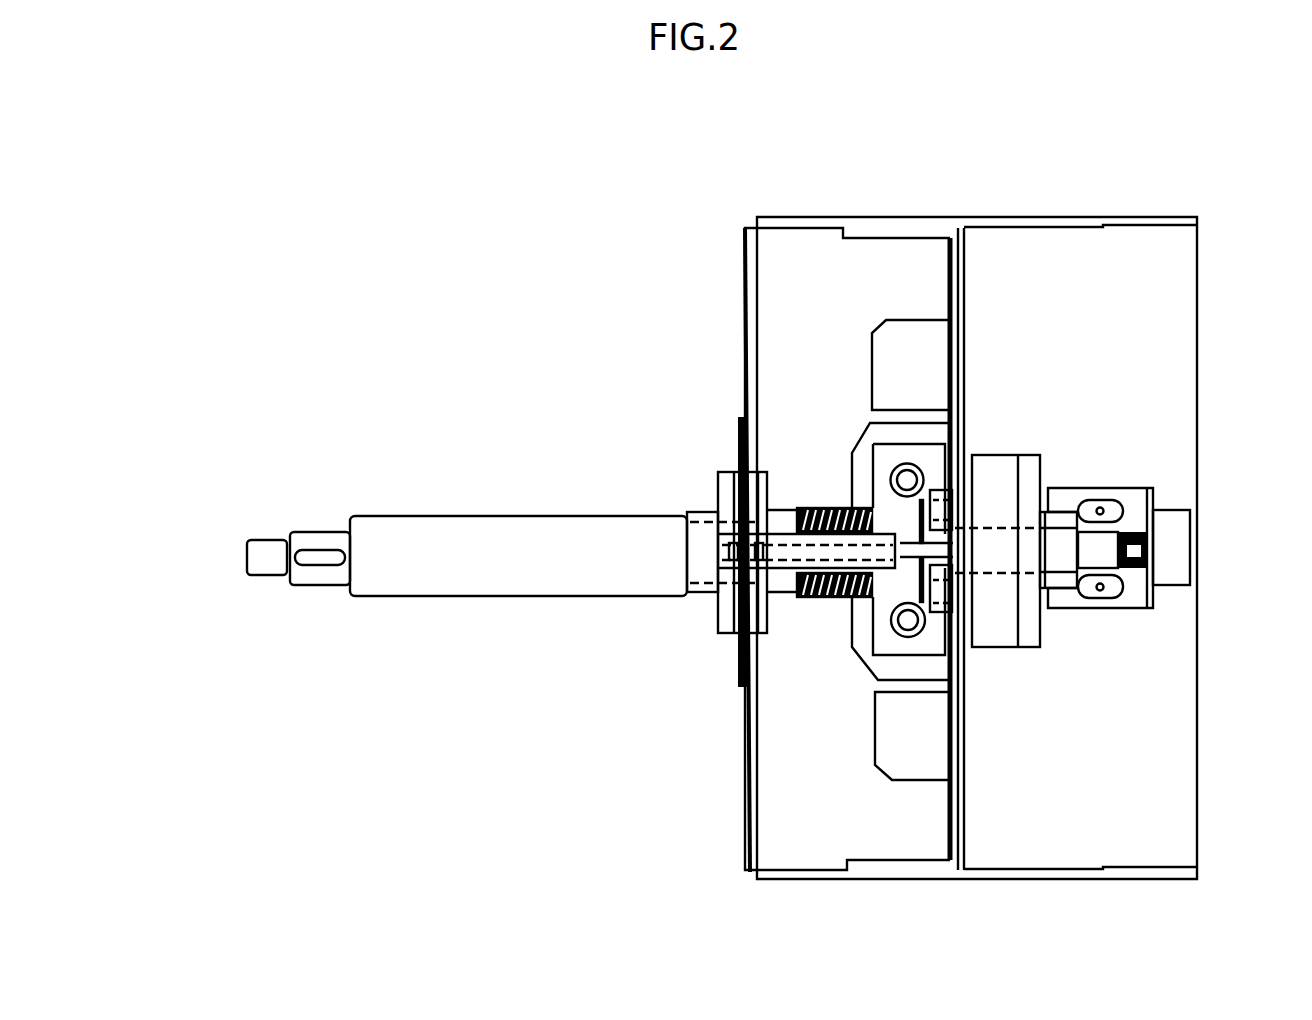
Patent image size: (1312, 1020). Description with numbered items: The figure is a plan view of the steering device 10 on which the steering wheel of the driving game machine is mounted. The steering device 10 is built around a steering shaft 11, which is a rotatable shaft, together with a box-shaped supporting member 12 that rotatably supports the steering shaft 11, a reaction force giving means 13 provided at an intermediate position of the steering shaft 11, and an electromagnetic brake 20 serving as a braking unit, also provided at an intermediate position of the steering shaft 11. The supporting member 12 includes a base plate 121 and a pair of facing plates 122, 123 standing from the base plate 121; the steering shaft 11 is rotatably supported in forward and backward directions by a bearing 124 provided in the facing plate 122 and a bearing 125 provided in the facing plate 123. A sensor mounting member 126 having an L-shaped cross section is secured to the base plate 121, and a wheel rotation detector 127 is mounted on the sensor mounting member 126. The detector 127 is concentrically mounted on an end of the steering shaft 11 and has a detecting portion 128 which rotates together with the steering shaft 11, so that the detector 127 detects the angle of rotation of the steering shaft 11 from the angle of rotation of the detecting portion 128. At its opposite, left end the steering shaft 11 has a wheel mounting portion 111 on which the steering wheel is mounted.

The steering device 10 is at (1117, 211).
The steering shaft 11 is at (470, 514).
The wheel mounting portion 111 is at (253, 538).
The supporting member 12 is at (870, 212).
The base plate 121 is at (1037, 267).
The facing plate 122 is at (748, 800).
The facing plate 123 is at (967, 812).
The bearing 124 is at (697, 512).
The bearing 125 is at (932, 492).
The sensor mounting member 126 is at (1130, 503).
The wheel rotation detector 127 is at (1173, 543).
The detecting portion 128 is at (1128, 570).
The reaction force giving means 13 is at (813, 600).
The electromagnetic brake 20 is at (1036, 448).